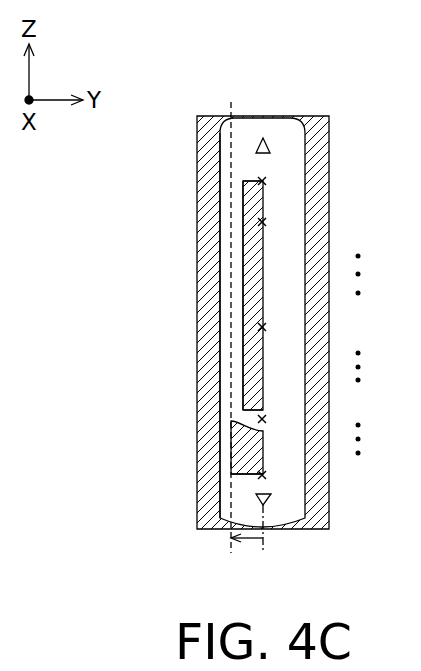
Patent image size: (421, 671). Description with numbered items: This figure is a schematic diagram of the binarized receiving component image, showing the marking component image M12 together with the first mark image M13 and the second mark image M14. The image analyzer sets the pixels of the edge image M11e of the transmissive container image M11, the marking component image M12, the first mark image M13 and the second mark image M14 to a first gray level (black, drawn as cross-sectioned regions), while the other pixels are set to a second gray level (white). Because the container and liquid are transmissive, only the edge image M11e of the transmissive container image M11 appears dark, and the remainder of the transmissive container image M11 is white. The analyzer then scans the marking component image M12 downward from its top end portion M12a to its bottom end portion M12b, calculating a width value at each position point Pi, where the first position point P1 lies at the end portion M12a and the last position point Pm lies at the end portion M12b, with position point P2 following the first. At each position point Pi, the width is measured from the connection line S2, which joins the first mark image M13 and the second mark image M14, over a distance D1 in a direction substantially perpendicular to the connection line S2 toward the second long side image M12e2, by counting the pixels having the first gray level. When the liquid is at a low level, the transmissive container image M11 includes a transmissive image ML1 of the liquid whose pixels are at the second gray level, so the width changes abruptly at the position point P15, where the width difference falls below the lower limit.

The transmissive container image M11 is at (225, 331).
The edge image M11e is at (228, 240).
The marking component image M12 is at (252, 208).
The end portion M12a is at (258, 181).
The end portion M12b is at (262, 475).
The second long side image M12e2 is at (245, 369).
The transmissive image ML1 is at (258, 419).
The first mark image M13 is at (266, 148).
The second mark image M14 is at (270, 497).
The first position point P1 is at (263, 181).
The position point P2 is at (263, 222).
The position point Pi is at (263, 327).
The position point P15 is at (263, 419).
The last position point Pm is at (263, 475).
The distance D1 is at (247, 541).
The connection line S2 is at (262, 543).